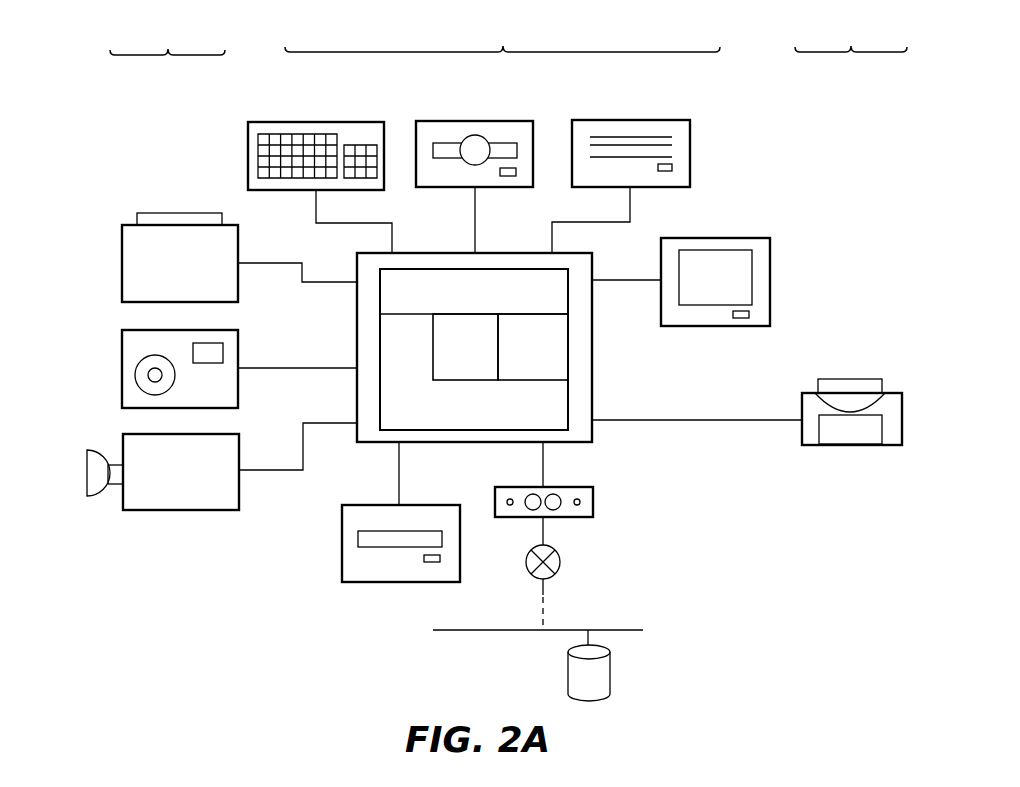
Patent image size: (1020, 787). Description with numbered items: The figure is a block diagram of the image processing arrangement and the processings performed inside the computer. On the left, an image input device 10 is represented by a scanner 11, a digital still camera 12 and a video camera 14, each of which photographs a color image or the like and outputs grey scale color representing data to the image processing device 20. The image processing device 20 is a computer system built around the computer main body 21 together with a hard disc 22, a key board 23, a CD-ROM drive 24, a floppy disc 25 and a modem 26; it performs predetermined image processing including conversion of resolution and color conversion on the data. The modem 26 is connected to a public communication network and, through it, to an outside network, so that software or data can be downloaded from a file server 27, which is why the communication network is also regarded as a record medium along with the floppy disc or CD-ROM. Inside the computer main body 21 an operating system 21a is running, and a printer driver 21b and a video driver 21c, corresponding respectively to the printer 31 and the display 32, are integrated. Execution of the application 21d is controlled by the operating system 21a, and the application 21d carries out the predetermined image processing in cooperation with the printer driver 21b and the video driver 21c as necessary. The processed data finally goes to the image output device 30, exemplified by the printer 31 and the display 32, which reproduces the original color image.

The image input device 10 is at (167, 36).
The scanner 11 is at (122, 278).
The digital still camera 12 is at (122, 368).
The video camera 14 is at (200, 510).
The image processing device 20 is at (502, 35).
The computer main body 21 is at (487, 362).
The operating system 21a is at (380, 412).
The printer driver 21b is at (475, 381).
The video driver 21c is at (548, 381).
The application 21d is at (570, 316).
The hard disc 22 is at (620, 120).
The key board 23 is at (305, 121).
The CD-ROM drive 24 is at (340, 539).
The floppy disc 25 is at (508, 121).
The modem 26 is at (593, 503).
The file server 27 is at (610, 680).
The image output device 30 is at (851, 33).
The printer 31 is at (840, 446).
The display 32 is at (690, 238).